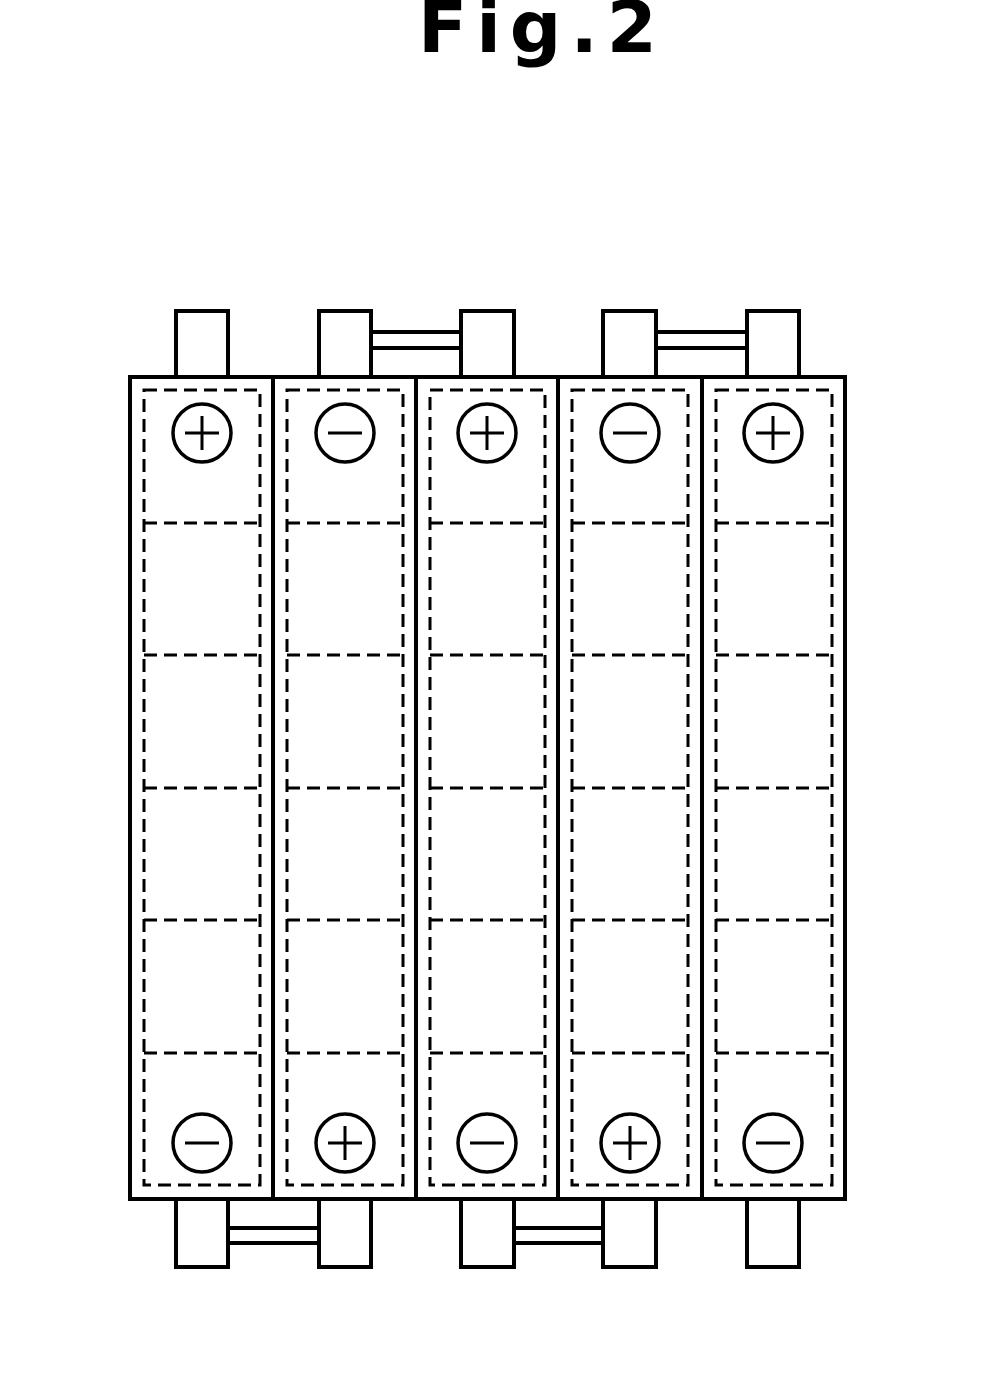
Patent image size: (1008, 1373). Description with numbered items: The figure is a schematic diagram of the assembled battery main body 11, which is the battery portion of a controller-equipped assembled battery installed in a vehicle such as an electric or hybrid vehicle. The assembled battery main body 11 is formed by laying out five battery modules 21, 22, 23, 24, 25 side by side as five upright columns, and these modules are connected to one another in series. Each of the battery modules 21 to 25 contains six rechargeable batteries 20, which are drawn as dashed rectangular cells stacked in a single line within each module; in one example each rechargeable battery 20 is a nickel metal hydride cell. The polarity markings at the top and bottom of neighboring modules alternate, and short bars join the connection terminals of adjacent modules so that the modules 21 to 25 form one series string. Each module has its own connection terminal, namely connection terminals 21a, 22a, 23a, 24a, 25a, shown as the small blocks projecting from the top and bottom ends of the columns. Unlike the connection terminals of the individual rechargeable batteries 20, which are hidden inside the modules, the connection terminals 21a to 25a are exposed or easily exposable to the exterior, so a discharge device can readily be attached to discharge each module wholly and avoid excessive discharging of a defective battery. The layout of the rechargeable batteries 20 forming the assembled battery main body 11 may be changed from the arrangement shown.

The assembled battery main body 11 is at (851, 178).
The rechargeable battery 20 is at (130, 727).
The battery module 21 is at (247, 377).
The battery module 22 is at (390, 377).
The battery module 23 is at (533, 377).
The battery module 24 is at (676, 377).
The battery module 25 is at (818, 377).
The connection terminal 21a is at (203, 311).
The connection terminal 22a is at (346, 311).
The connection terminal 23a is at (489, 311).
The connection terminal 24a is at (632, 311).
The connection terminal 25a is at (775, 311).